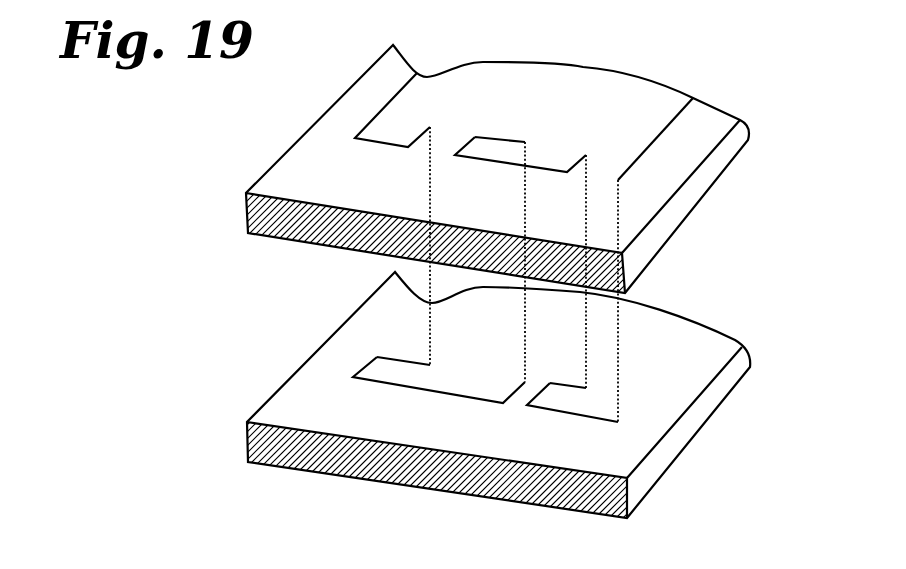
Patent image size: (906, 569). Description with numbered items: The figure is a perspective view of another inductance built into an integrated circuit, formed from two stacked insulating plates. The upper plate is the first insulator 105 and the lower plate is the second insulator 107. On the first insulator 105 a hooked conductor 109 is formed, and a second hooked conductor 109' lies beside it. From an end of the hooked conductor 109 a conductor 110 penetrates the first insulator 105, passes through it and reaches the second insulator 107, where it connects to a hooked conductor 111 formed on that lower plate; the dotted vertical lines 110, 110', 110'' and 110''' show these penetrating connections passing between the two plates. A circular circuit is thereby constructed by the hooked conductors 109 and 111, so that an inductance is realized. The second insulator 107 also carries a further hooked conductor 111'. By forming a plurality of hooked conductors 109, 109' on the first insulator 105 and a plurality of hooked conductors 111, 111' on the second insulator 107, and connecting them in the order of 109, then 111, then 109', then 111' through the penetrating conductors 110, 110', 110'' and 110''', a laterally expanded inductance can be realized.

The first insulator 105 is at (703, 180).
The second insulator 107 is at (695, 417).
The hooked conductor 109 is at (405, 110).
The hooked conductor 109' is at (520, 131).
The penetrating conductor 110 is at (390, 246).
The penetrating conductor 110' is at (483, 262).
The penetrating conductor 110'' is at (640, 271).
The penetrating conductor 110''' is at (666, 301).
The hooked conductor 111 is at (439, 393).
The hooked conductor 111' is at (573, 417).